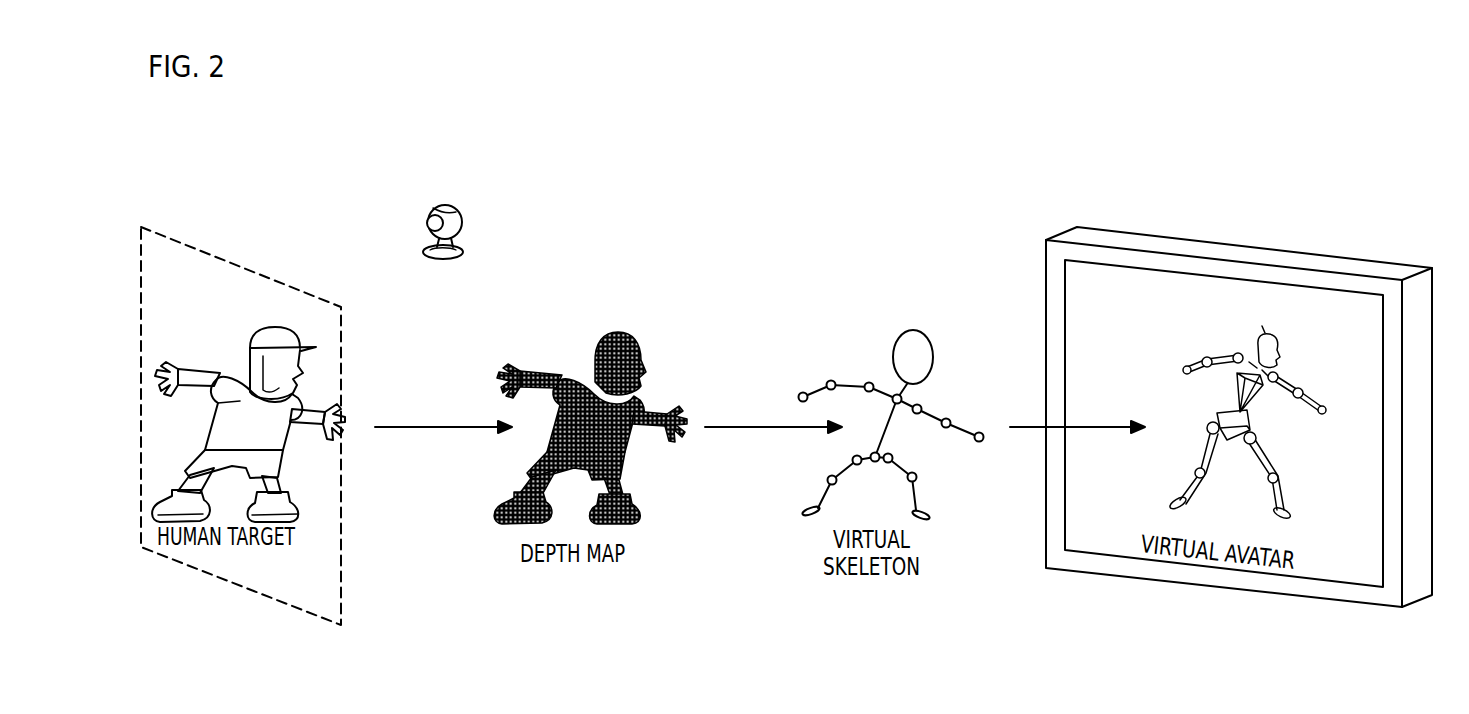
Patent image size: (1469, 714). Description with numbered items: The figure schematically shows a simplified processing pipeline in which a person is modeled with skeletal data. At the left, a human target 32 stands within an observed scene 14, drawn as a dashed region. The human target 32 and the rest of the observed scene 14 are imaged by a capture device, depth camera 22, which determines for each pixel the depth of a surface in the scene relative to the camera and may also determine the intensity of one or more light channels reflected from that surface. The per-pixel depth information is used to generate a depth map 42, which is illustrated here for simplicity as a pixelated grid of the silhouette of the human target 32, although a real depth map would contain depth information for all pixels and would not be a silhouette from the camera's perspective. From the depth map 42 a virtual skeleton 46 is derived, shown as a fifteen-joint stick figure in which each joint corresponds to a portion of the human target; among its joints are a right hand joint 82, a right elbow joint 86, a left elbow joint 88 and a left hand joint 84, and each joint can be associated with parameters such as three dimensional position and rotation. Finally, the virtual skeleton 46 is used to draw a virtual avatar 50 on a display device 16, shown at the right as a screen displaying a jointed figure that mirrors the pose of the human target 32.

The observed scene 14 is at (192, 291).
The human target 32 is at (254, 436).
The depth camera 22 is at (465, 207).
The depth map 42 is at (599, 332).
The virtual skeleton 46 is at (924, 368).
The right hand joint 82 is at (803, 392).
The right elbow joint 86 is at (831, 380).
The left elbow joint 88 is at (946, 418).
The left hand joint 84 is at (979, 432).
The display device 16 is at (1358, 482).
The virtual avatar 50 is at (1263, 338).